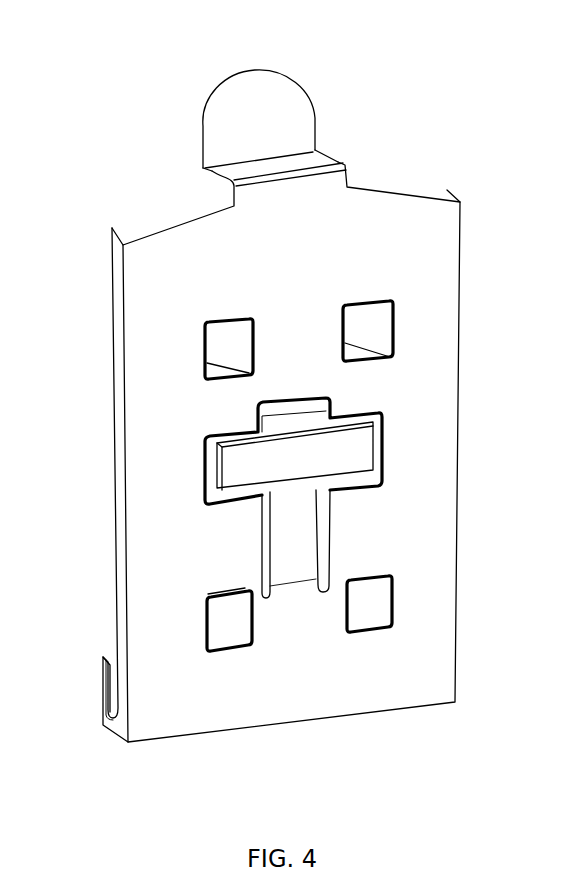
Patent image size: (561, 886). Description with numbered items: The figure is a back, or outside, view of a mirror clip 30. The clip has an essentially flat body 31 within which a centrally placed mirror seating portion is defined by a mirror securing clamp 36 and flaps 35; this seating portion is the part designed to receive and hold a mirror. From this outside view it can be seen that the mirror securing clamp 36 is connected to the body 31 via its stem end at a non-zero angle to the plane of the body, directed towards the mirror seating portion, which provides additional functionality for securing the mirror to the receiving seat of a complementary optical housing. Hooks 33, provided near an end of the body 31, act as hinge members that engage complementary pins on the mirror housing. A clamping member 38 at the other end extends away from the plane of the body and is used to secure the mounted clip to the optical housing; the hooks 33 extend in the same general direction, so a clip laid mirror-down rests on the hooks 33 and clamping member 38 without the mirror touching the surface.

The mirror clip 30 is at (413, 84).
The body 31 is at (405, 210).
The hooks 33 is at (102, 683).
The flaps 35 is at (357, 351).
The mirror securing clamp 36 is at (262, 463).
The clamping member 38 is at (282, 103).